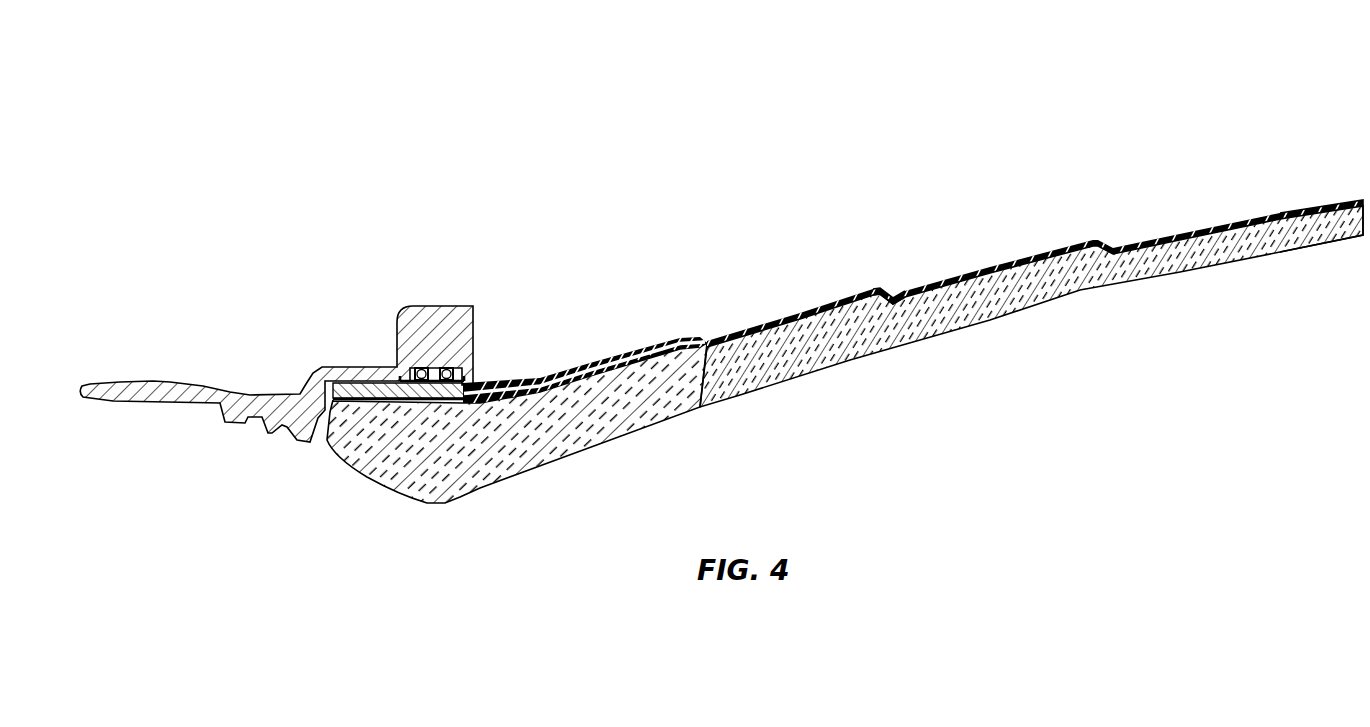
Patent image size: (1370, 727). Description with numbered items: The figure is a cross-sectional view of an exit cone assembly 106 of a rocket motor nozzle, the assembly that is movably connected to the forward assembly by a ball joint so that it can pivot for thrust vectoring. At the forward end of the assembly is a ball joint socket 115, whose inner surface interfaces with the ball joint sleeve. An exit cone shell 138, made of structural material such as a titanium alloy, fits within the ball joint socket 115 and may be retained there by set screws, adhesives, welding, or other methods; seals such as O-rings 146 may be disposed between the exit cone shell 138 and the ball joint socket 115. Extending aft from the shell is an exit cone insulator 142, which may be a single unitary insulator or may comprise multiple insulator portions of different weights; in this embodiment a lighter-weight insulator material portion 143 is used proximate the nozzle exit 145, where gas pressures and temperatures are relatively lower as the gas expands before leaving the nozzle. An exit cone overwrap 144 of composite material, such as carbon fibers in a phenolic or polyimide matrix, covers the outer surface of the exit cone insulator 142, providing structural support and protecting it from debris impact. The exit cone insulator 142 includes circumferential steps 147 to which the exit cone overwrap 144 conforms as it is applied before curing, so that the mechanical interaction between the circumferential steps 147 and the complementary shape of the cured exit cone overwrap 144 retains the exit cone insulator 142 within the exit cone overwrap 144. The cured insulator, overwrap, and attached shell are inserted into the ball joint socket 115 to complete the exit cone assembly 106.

The exit cone assembly 106 is at (936, 146).
The ball joint socket 115 is at (322, 365).
The exit cone shell 138 is at (536, 381).
The exit cone insulator 142 is at (500, 467).
The lighter-weight insulator material portion 143 is at (1150, 266).
The exit cone overwrap 144 is at (856, 296).
The nozzle exit 145 is at (1286, 183).
The O-rings 146 is at (446, 367).
The circumferential steps 147 is at (882, 302).